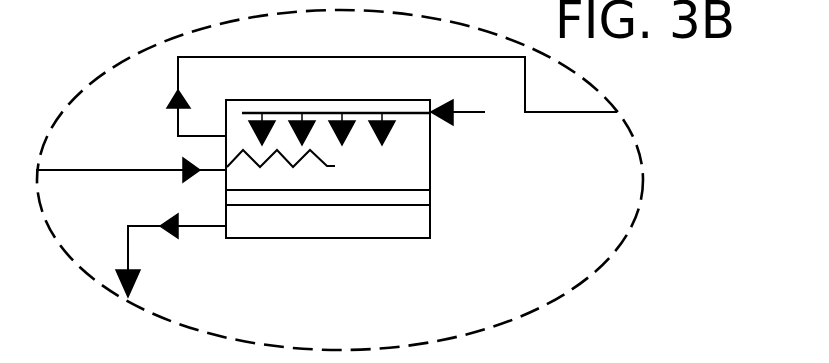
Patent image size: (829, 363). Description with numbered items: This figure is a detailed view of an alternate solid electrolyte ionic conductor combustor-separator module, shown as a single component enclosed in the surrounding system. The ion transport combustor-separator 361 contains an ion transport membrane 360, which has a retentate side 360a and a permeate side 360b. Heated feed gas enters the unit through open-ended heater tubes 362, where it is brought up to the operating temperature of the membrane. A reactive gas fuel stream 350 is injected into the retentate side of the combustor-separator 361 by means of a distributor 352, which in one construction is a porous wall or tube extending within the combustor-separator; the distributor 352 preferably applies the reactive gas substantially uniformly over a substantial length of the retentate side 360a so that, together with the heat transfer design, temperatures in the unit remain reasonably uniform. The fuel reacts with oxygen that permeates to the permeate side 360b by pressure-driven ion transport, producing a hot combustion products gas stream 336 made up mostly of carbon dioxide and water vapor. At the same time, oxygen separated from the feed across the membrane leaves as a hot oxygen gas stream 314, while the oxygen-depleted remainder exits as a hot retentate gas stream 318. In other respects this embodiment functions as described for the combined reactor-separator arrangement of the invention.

The hot oxygen gas stream 314 is at (201, 228).
The hot retentate gas stream 318 is at (387, 56).
The combustion products gas stream 336 is at (147, 168).
The reactive gas fuel stream 350 is at (472, 113).
The distributor 352 is at (378, 76).
The ion transport membrane 360 is at (226, 199).
The retentate side 360a is at (420, 189).
The permeate side 360b is at (330, 207).
The ion transport combustor-separator 361 is at (413, 238).
The heater tubes 362 is at (335, 166).